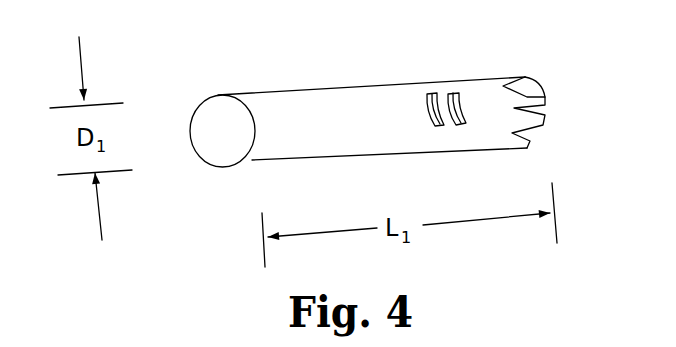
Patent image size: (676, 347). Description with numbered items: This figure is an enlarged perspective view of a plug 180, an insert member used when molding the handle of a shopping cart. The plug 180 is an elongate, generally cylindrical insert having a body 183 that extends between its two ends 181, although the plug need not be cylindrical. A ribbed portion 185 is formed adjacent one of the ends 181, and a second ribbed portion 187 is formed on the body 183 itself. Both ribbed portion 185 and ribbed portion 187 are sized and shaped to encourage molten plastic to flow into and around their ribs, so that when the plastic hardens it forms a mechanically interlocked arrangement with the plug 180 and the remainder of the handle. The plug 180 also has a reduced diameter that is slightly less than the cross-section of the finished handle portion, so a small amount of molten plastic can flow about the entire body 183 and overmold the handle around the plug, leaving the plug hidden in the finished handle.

The plug 180 is at (357, 82).
The ends 181 is at (208, 143).
The body 183 is at (305, 158).
The ribbed portion 185 is at (540, 93).
The ribbed portion 187 is at (435, 93).